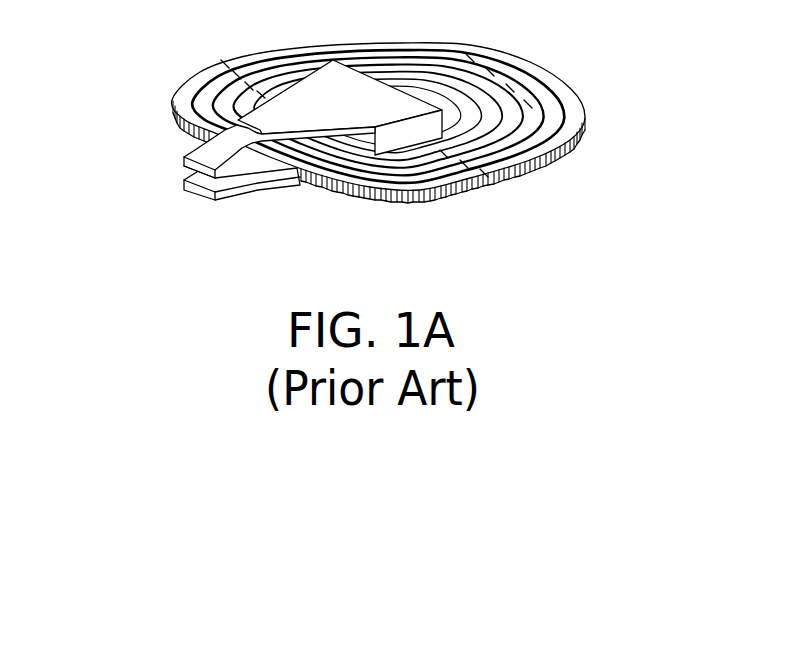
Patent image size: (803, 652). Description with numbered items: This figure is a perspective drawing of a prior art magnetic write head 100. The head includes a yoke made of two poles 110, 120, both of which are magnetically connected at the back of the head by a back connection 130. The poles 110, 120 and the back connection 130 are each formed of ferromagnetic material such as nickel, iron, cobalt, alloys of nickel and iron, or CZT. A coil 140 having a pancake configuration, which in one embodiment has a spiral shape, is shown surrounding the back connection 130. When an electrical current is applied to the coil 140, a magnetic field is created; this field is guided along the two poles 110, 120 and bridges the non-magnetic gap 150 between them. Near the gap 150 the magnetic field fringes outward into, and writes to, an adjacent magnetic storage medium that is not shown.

The prior art planar coil assembly 100 is at (390, 199).
The pole 110 is at (185, 161).
The pole 120 is at (207, 198).
The back connection 130 is at (417, 138).
The coil 140 is at (573, 134).
The non-magnetic gap 150 is at (185, 175).